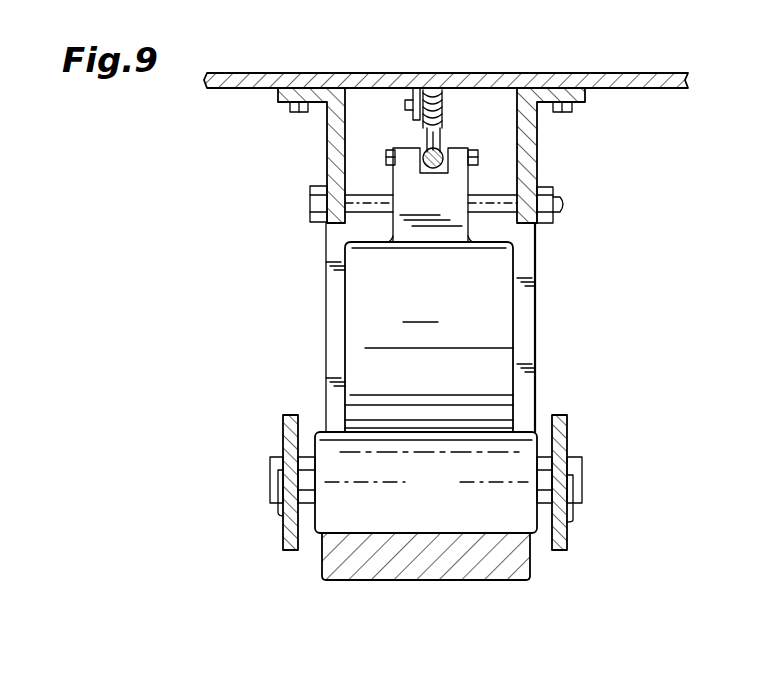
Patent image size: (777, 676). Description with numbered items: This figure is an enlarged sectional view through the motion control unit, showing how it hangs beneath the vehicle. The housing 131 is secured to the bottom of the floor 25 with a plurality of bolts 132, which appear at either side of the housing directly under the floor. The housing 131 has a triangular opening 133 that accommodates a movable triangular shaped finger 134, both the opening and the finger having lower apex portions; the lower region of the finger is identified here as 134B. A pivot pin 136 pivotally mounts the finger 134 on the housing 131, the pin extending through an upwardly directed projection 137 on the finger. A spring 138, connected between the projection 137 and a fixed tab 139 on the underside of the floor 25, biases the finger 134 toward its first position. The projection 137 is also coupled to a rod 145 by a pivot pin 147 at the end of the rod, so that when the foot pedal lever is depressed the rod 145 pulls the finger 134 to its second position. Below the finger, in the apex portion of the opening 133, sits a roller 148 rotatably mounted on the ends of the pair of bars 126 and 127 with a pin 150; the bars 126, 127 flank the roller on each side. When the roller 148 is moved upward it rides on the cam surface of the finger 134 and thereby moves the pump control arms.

The floor 25 is at (598, 78).
The bar 126 is at (283, 549).
The bar 127 is at (568, 544).
The housing 131 is at (537, 250).
The bolts 132 is at (298, 116).
The triangular opening 133 is at (330, 299).
The finger 134 is at (513, 319).
The cylinder lower portion 134B is at (490, 380).
The pivot pin 136 is at (310, 202).
The projection 137 is at (452, 207).
The spring 138 is at (446, 92).
The fixed tab 139 is at (420, 93).
The rod 145 is at (386, 157).
The pivot pin 147 is at (480, 158).
The roller 148 is at (448, 495).
The pin 150 is at (582, 476).